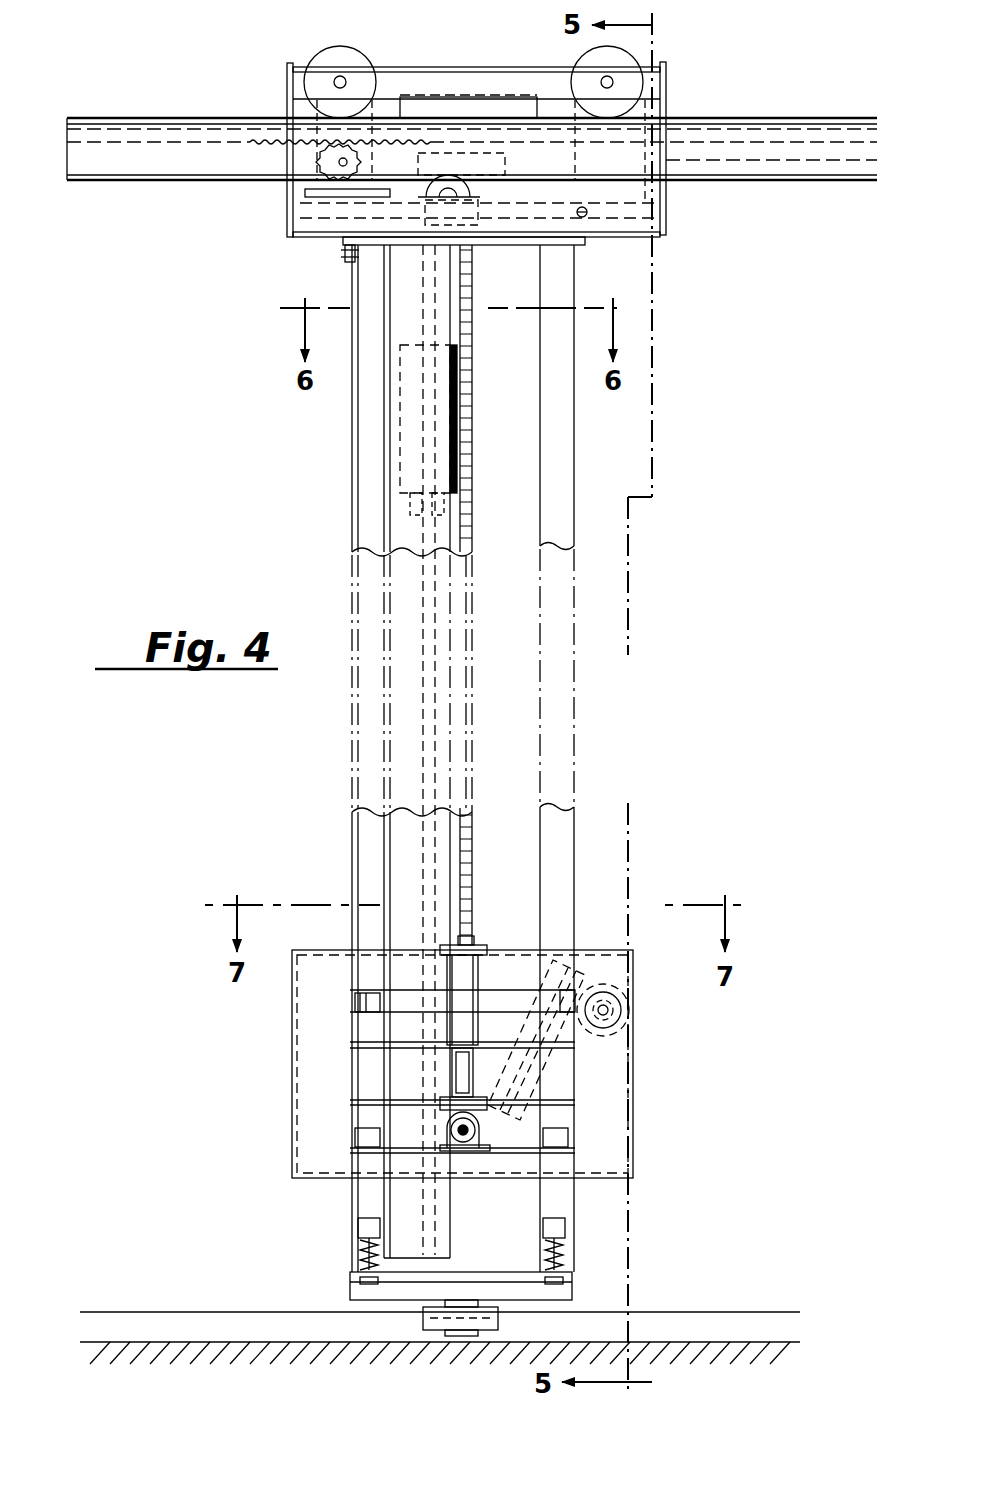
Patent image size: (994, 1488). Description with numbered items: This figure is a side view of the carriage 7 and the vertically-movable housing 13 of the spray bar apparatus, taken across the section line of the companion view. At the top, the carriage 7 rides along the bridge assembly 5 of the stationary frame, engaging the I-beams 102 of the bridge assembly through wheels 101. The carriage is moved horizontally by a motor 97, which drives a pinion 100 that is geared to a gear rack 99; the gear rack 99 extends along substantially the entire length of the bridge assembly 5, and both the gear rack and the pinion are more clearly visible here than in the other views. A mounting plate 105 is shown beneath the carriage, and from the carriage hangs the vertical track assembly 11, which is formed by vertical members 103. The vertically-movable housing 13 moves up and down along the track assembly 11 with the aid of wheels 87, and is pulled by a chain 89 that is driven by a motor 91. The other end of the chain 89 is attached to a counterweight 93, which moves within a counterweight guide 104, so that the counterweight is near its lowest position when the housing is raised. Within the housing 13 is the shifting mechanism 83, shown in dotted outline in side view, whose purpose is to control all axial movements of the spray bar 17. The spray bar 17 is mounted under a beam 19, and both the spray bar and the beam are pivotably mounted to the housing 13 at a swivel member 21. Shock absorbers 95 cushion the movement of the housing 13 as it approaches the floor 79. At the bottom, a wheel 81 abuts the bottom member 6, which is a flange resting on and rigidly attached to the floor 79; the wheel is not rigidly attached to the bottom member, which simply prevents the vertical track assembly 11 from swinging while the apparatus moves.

The bridge assembly 5 is at (165, 115).
The bottom member 6 is at (248, 1322).
The carriage 7 is at (459, 64).
The vertical track assembly 11 is at (578, 815).
The vertically-movable housing 13 is at (504, 940).
The spray bar 17 is at (466, 1143).
The beam 19 is at (455, 1068).
The swivel member 21 is at (462, 1022).
The floor 79 is at (328, 1350).
The wheel 81 is at (462, 1322).
The shifting mechanism 83 is at (550, 1084).
The wheels 87 is at (573, 945).
The chain 89 is at (473, 400).
The motor 91 is at (636, 190).
The counterweight 93 is at (466, 450).
The shock absorbers 95 is at (356, 1222).
The motor 97 is at (483, 110).
The gear rack 99 is at (268, 140).
The pinion 100 is at (290, 197).
The wheels 101 is at (333, 58).
The I-beams 102 is at (800, 160).
The vertical members 103 is at (354, 478).
The counterweight guide 104 is at (445, 534).
The mounting plate 105 is at (540, 240).